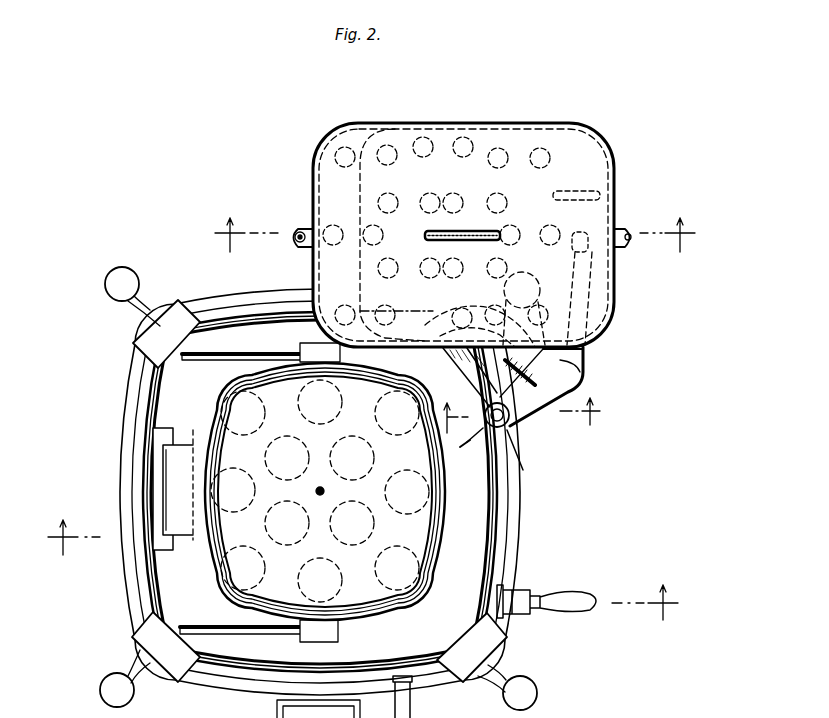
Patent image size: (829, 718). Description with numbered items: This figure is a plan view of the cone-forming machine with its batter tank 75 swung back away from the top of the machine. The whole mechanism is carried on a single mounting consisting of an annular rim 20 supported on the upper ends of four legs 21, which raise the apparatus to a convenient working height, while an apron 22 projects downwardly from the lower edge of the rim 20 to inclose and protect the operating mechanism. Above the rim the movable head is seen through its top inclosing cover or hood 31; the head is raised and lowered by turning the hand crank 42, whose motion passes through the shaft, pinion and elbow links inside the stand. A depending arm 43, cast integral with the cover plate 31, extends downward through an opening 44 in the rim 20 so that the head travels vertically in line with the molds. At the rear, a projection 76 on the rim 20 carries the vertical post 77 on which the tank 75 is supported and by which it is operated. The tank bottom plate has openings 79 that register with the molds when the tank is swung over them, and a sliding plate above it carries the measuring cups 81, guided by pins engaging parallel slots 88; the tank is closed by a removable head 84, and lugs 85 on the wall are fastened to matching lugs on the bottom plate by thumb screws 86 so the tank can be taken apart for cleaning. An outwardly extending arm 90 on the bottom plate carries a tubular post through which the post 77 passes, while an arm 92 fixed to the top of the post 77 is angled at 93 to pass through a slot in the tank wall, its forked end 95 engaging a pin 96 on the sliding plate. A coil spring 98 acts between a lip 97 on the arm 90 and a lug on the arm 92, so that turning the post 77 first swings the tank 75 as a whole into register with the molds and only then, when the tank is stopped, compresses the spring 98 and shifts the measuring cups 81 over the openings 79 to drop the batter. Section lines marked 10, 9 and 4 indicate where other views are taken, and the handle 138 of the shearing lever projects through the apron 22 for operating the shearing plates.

The annular rim 20 is at (483, 507).
The apron 22 is at (510, 558).
The legs 21 is at (538, 695).
The top inclosing cover or hood 31 is at (408, 523).
The hand crank 42 is at (580, 598).
The depending arm 43 is at (180, 442).
The opening 44 is at (160, 437).
The lid 75 is at (546, 124).
The projection 76 is at (505, 430).
The post 77 is at (511, 414).
The openings 79 is at (337, 157).
The measuring cups 81 is at (390, 148).
The removable head 84 is at (609, 284).
The lugs 85 is at (305, 230).
The thumb screws 86 is at (300, 244).
The parallel slots 88 is at (570, 191).
The outwardly extending arm 90 is at (455, 361).
The arm 92 is at (540, 401).
The angle 93 is at (580, 354).
The forked end 95 is at (574, 253).
The pin 96 is at (582, 232).
The lip 97 is at (580, 375).
The coil spring 98 is at (558, 390).
The handle 138 is at (411, 705).
The section line 10- 10 is at (451, 235).
The section line 9- 9 is at (528, 417).
The section line 4- 4 is at (360, 570).